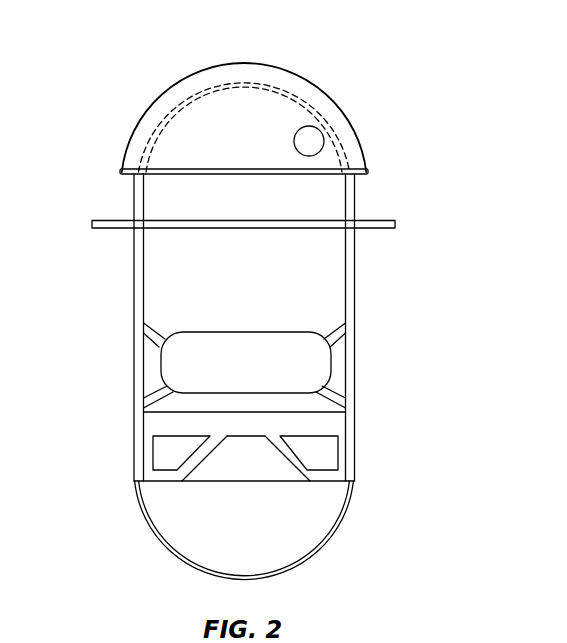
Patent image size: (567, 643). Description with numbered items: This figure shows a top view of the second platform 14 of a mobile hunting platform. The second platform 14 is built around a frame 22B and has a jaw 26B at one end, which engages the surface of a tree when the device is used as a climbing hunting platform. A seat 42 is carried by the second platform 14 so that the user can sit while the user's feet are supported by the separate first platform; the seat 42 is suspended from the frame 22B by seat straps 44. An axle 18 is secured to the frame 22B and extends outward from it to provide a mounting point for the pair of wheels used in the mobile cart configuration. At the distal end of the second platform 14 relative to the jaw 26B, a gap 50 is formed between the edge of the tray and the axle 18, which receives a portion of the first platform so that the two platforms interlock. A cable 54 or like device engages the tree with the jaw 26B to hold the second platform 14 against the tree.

The second platform 14 is at (442, 137).
The gap 50 is at (323, 210).
The frame 22B is at (355, 283).
The axle 18 is at (92, 224).
The seat 42 is at (330, 370).
The seat straps 44 is at (157, 332).
The jaw 26B is at (147, 443).
The cable 54 is at (328, 555).